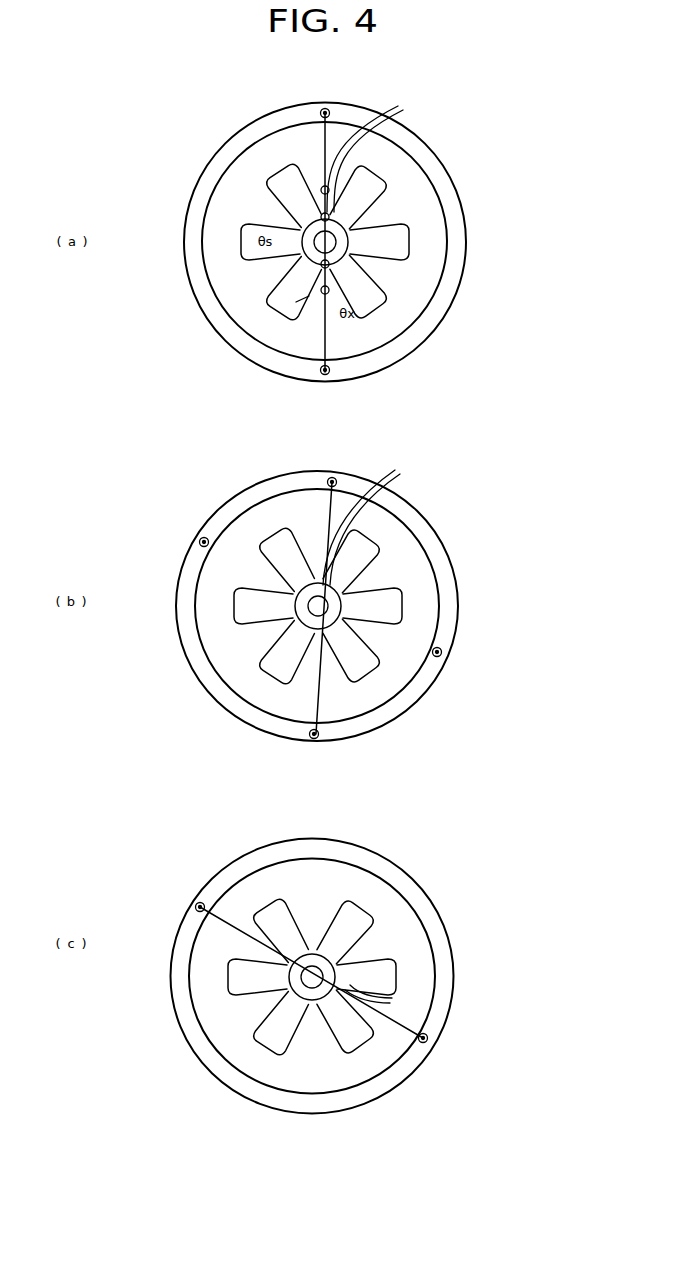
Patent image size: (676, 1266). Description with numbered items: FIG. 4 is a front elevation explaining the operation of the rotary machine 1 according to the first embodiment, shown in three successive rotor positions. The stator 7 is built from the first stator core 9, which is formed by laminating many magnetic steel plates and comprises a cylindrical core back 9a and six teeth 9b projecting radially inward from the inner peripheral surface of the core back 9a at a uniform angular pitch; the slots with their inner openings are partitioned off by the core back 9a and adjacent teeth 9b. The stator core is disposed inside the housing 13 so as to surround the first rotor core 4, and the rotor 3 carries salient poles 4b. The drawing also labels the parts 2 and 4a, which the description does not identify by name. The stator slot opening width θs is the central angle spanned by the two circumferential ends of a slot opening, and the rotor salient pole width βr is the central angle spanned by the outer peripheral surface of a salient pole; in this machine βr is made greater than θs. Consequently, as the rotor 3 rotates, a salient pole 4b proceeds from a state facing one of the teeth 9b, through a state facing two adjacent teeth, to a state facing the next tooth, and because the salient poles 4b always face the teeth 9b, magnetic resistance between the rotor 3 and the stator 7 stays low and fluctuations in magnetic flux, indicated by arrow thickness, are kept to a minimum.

The rotary machine 1 is at (166, 110).
The impeller hub 2 is at (360, 258).
The rotor 3 is at (300, 258).
The first rotor core 4 is at (372, 246).
The motor base 4a is at (306, 228).
The salient poles 4b is at (318, 212).
The stator 7 is at (450, 233).
The first stator core 9 is at (423, 203).
The core back 9a is at (437, 179).
The teeth 9b is at (490, 1011).
The housing 13 is at (430, 136).